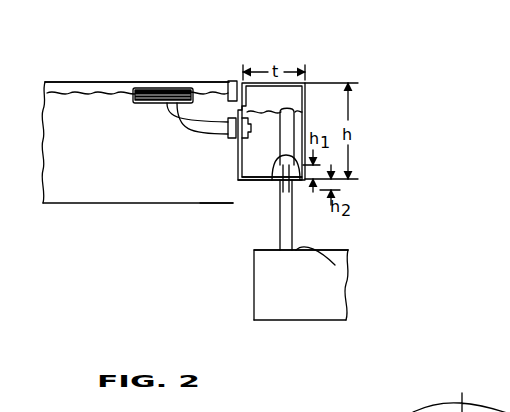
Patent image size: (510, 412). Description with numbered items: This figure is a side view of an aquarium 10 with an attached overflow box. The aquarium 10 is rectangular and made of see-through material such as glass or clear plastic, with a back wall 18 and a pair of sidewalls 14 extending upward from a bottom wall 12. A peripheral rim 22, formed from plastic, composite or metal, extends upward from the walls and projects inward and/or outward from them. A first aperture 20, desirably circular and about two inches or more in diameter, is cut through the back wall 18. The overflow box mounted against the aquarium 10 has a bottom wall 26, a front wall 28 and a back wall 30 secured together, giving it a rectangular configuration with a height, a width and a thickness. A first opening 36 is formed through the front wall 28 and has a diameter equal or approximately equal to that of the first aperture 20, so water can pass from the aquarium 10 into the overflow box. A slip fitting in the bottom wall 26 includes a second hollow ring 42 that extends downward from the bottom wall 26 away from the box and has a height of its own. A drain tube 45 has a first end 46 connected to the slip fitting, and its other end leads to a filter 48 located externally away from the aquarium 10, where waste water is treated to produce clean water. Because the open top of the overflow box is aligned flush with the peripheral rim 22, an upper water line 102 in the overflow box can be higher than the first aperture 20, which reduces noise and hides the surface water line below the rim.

The aquarium 10 is at (338, 54).
The bottom wall 12 is at (143, 204).
The sidewall 14 is at (69, 88).
The back wall 18 is at (235, 200).
The first aperture 20 is at (230, 141).
The peripheral rim 22 is at (231, 81).
The bottom wall 26 is at (260, 180).
The front wall 28 is at (238, 165).
The back wall 30 is at (296, 109).
The first opening 36 is at (247, 128).
The second hollow ring 42 is at (296, 250).
The drain tube 45 is at (293, 236).
The first end 46 is at (290, 192).
The filter 48 is at (337, 258).
The upper water line 102 is at (251, 113).